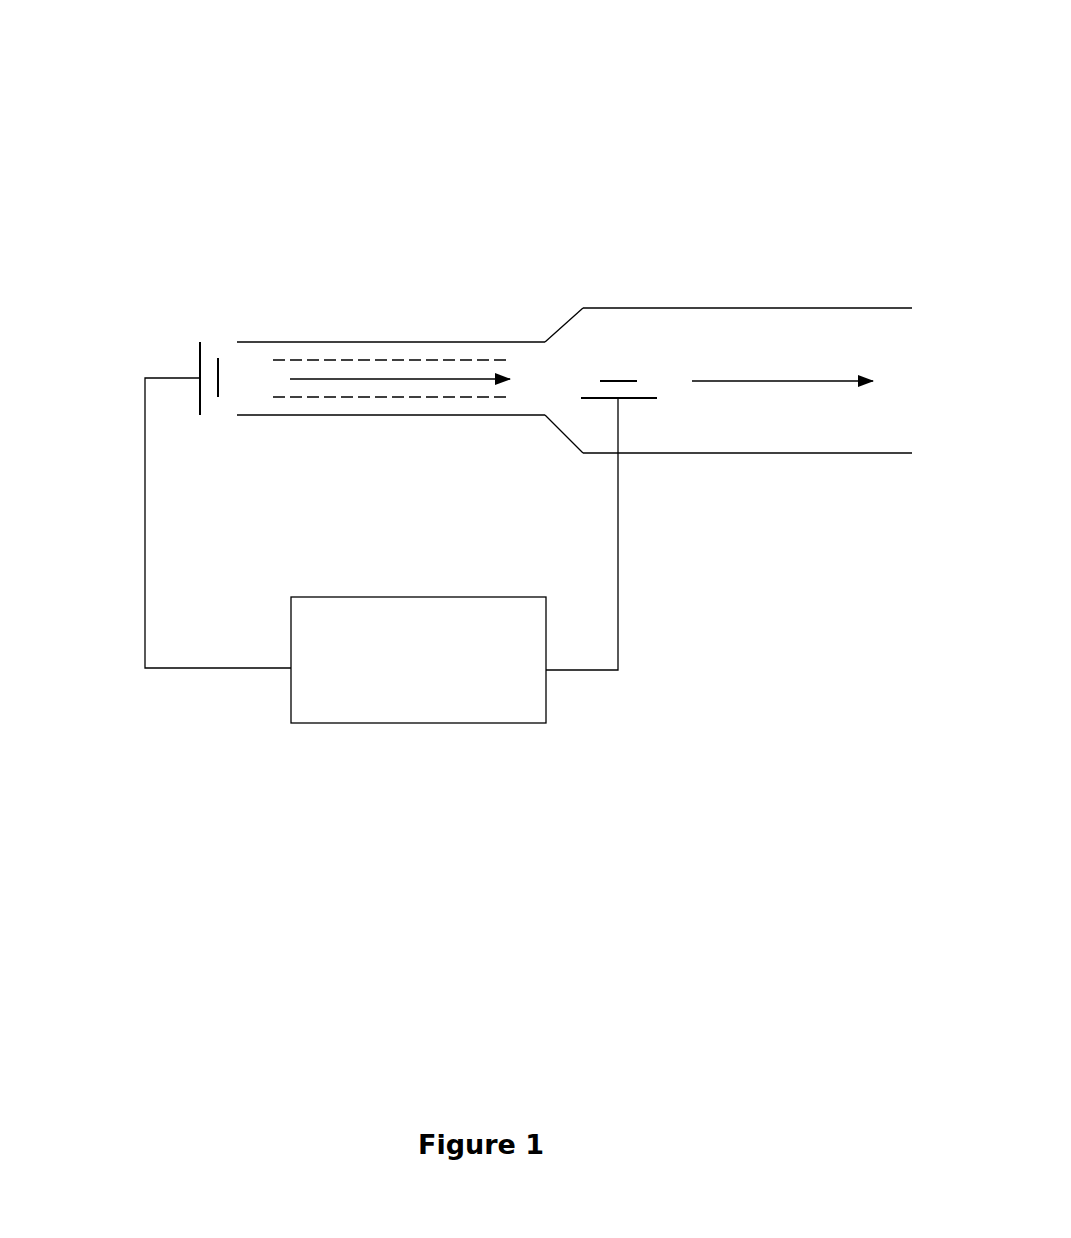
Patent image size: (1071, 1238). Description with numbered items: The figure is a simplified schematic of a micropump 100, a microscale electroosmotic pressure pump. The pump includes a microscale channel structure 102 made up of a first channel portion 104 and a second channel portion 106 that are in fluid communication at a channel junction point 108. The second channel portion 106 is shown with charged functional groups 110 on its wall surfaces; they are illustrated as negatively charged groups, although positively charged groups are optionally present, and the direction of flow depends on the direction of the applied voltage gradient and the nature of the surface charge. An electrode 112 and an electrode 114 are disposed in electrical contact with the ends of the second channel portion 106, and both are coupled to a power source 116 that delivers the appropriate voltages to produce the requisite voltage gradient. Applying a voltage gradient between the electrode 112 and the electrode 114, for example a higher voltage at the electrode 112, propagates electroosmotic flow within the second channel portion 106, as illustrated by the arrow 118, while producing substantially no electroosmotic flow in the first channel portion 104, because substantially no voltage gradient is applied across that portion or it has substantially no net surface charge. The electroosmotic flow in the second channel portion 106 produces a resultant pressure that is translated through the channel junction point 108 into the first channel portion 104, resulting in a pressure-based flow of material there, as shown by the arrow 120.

The micropump 100 is at (125, 125).
The microscale channel structure 102 is at (911, 200).
The first channel portion 104 is at (698, 308).
The second channel portion 106 is at (352, 342).
The channel junction point 108 is at (545, 342).
The charged functional groups 110 is at (330, 361).
The electrode 112 is at (182, 362).
The electrode 114 is at (637, 418).
The power source 116 is at (418, 660).
The arrow 118 is at (465, 378).
The arrow 120 is at (782, 363).